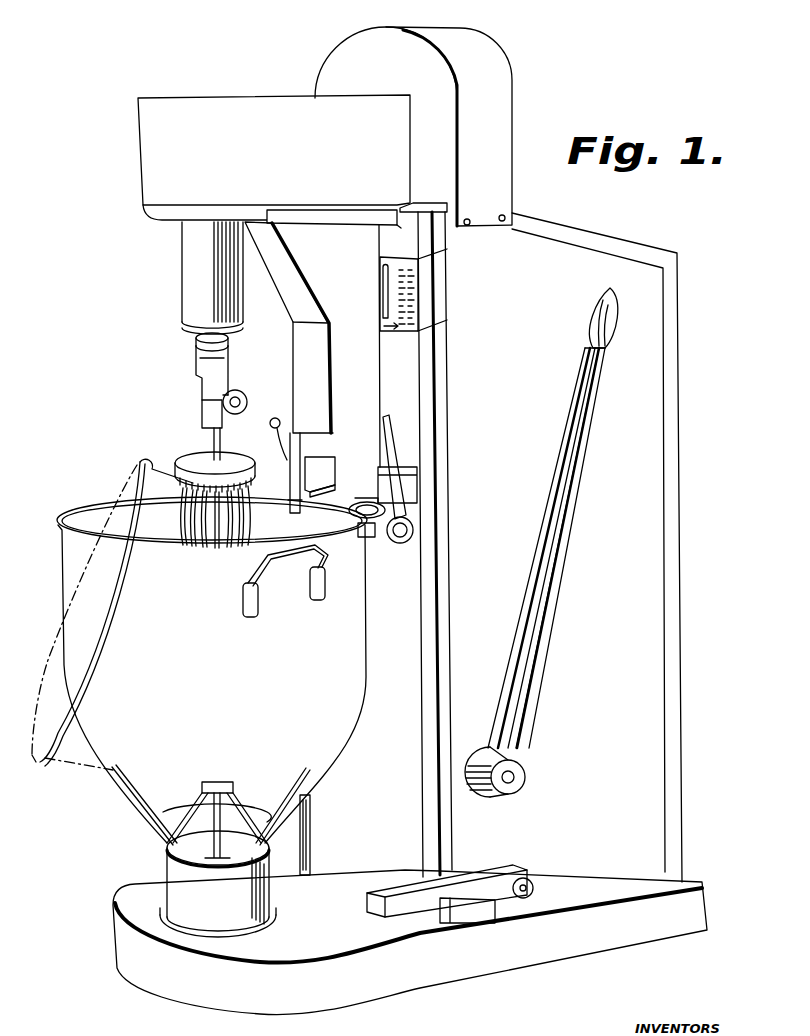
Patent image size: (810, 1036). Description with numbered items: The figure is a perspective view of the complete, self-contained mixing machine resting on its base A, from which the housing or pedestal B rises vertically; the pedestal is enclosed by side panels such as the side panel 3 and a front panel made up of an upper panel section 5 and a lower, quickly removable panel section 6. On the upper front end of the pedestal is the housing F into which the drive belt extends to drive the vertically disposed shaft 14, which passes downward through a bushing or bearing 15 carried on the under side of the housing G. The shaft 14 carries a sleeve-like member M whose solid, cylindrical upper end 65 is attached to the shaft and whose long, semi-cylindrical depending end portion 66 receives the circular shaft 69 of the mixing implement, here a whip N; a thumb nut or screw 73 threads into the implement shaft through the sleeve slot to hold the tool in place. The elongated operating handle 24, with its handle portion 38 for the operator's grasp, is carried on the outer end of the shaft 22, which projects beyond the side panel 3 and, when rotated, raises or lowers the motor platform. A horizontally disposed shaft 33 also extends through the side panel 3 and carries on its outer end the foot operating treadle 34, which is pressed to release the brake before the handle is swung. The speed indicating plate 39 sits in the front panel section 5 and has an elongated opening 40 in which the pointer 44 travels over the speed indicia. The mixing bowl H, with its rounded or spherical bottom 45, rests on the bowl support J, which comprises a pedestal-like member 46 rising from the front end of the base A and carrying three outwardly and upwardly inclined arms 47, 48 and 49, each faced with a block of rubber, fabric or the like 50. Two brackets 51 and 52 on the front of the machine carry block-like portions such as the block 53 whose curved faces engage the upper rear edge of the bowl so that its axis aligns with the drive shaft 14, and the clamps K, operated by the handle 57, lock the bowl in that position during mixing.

The housing F is at (413, 126).
The housing G is at (274, 161).
The bushing or bearing 15 is at (184, 252).
The shaft 14 is at (202, 341).
The upper end of sleeve 65 is at (206, 360).
The thumb nut or screw 73 is at (223, 402).
The depending end portion 66 is at (210, 418).
The circular shaft 69 is at (212, 440).
The whip N is at (200, 467).
The sleeve-like member M is at (289, 327).
The operating handle 57 is at (276, 417).
The bracket 51 is at (327, 463).
The bracket 52 is at (418, 473).
The housing or pedestal B is at (428, 488).
The clamps K is at (421, 503).
The block-like portion 53 is at (367, 537).
The speed indicating plate 39 is at (420, 266).
The elongated opening 40 is at (381, 281).
The pointer 44 is at (400, 325).
The upper panel section 5 is at (407, 363).
The side panel 3 is at (597, 547).
The handle portion 38 is at (600, 318).
The operating handle 24 is at (570, 492).
The shaft 22 is at (514, 777).
The bowl H is at (212, 670).
The lower panel section 6 is at (321, 635).
The arm 47 is at (130, 795).
The arm 49 is at (292, 800).
The block of rubber, fabric or the like 50 is at (222, 770).
The rounded or spherical bottom 45 is at (266, 795).
The arm 48 is at (262, 856).
The pedestal-like member 46 is at (175, 884).
The bowl support J is at (218, 884).
The base A is at (410, 942).
The foot operating treadle 34 is at (400, 878).
The shaft 33 is at (530, 882).